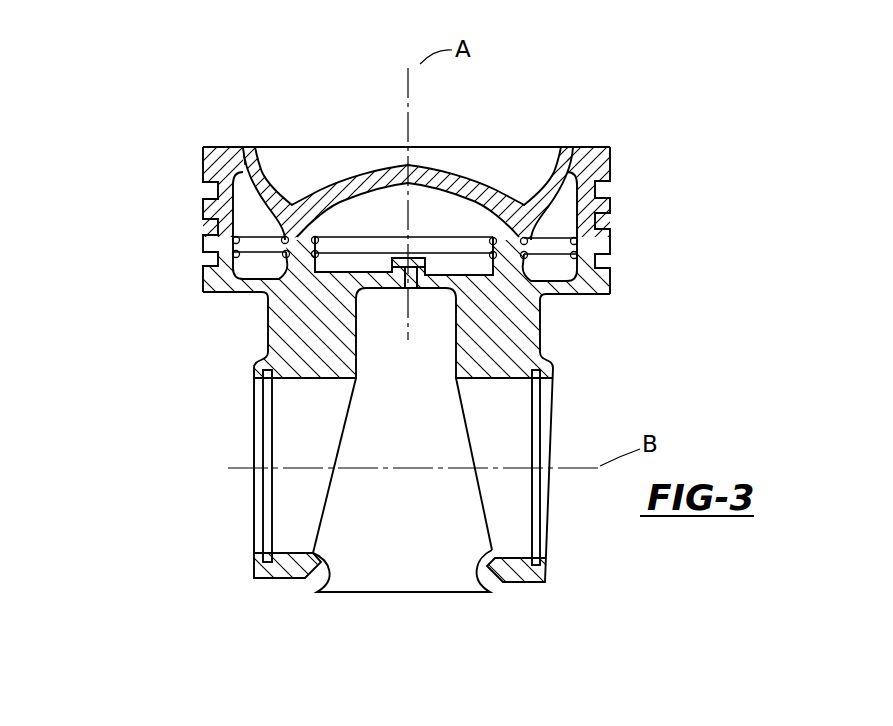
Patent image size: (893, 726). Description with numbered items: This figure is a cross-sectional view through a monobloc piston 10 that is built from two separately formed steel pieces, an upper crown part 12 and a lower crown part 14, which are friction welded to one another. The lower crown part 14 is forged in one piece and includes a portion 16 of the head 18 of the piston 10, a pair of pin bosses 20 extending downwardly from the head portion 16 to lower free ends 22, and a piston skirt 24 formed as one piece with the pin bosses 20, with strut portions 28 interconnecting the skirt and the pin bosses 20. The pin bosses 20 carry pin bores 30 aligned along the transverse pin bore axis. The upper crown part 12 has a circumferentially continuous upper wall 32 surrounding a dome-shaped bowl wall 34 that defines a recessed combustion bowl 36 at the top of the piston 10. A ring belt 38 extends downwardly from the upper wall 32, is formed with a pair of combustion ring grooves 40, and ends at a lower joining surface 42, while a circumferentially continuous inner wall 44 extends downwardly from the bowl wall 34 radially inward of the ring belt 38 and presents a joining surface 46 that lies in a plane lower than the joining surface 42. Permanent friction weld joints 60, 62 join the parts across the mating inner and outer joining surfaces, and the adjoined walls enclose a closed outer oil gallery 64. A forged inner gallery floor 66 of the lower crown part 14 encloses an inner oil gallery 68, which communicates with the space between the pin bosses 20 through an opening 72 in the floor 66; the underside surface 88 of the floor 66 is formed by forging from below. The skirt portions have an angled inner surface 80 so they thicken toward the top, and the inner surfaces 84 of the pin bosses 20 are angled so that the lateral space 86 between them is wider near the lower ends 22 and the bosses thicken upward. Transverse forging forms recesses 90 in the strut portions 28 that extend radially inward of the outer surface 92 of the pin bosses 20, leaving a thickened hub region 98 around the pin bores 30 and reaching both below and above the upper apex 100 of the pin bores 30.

The monobloc piston 10 is at (698, 216).
The upper crown part 12 is at (612, 147).
The lower crown part 14 is at (605, 313).
The head portion 16 is at (609, 280).
The head 18 is at (205, 147).
The pin bosses 20 is at (256, 572).
The lower free ends of pin bosses 22 is at (285, 578).
The piston skirt 24 is at (383, 566).
The strut portions 28 is at (268, 342).
The pin bores 30 is at (257, 545).
The upper wall 32 is at (253, 160).
The bowl wall 34 is at (362, 178).
The combustion bowl 36 is at (332, 165).
The ring belt 38 is at (203, 160).
The combustion ring grooves 40 is at (203, 226).
The outer joining surface 42 is at (203, 258).
The inner wall 44 is at (306, 200).
The inner joining surface 46 is at (327, 253).
The inner friction weld joint 60 is at (508, 160).
The outer friction weld joint 62 is at (560, 185).
The outer oil gallery 64 is at (611, 211).
The inner gallery floor 66 is at (474, 178).
The inner oil gallery 68 is at (420, 160).
The opening 72 is at (395, 182).
The inner surface of skirt portions 80 is at (368, 580).
The inner surfaces of pin bosses 84 is at (317, 592).
The lateral space 86 is at (442, 553).
The underside surface of inner gallery floor 88 is at (408, 288).
The transverse forged recesses 90 is at (268, 322).
The outer surface of pin bosses 92 is at (263, 450).
The hub region 98 is at (258, 400).
The upper apex of pin bores 100 is at (327, 380).